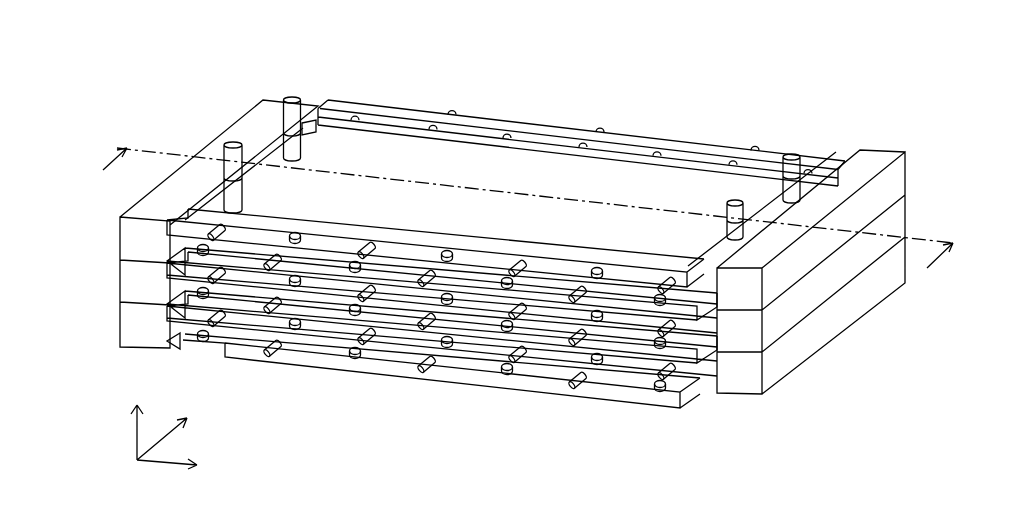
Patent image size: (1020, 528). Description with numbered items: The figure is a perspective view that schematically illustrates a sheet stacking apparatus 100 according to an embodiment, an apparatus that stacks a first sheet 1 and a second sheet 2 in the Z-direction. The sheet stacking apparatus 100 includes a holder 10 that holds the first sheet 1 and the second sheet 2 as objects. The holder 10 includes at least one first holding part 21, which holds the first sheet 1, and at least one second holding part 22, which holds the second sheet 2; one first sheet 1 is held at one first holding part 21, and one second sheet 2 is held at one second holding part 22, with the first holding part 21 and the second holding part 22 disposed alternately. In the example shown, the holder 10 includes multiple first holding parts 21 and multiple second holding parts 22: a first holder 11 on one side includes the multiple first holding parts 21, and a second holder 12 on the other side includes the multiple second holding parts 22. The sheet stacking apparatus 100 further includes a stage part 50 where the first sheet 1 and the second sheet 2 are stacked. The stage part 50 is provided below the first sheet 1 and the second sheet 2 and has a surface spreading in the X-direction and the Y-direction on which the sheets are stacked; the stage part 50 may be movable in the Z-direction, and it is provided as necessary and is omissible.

The sheet stacking apparatus 100 is at (324, 60).
The first sheet 1 is at (259, 173).
The second sheet 2 is at (628, 170).
The holder 10 is at (842, 143).
The first holder 11 is at (80, 229).
The second holder 12 is at (872, 366).
The first holding part 21 is at (135, 320).
The second holding part 22 is at (750, 290).
The stage part 50 is at (442, 373).